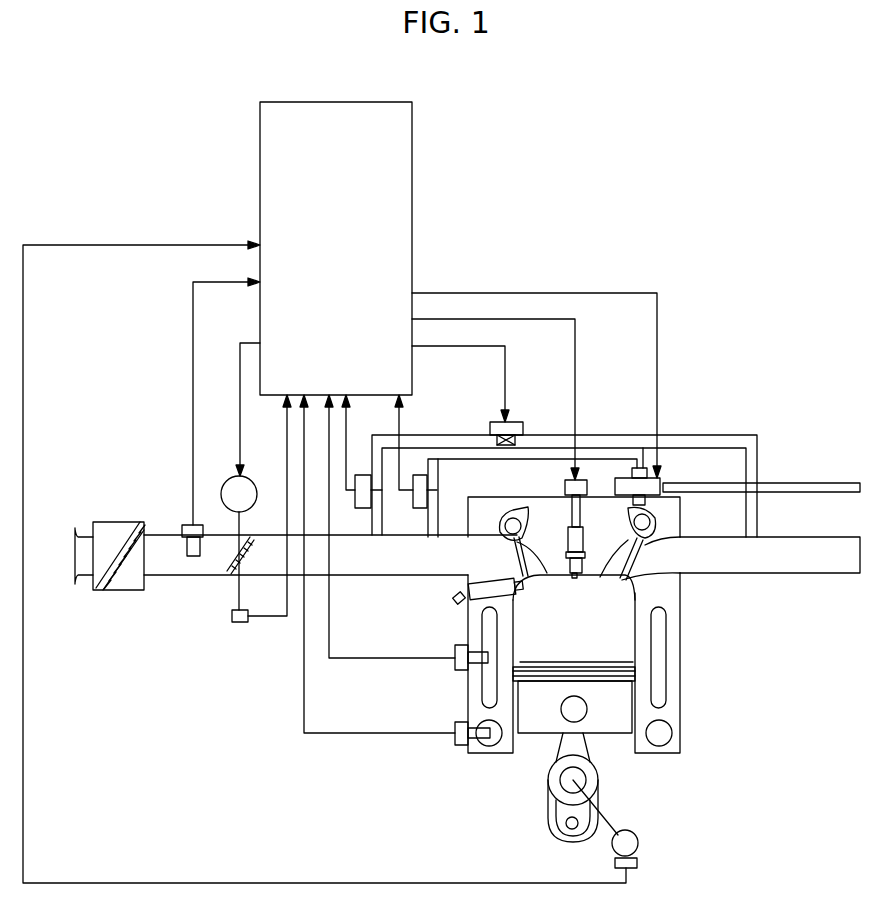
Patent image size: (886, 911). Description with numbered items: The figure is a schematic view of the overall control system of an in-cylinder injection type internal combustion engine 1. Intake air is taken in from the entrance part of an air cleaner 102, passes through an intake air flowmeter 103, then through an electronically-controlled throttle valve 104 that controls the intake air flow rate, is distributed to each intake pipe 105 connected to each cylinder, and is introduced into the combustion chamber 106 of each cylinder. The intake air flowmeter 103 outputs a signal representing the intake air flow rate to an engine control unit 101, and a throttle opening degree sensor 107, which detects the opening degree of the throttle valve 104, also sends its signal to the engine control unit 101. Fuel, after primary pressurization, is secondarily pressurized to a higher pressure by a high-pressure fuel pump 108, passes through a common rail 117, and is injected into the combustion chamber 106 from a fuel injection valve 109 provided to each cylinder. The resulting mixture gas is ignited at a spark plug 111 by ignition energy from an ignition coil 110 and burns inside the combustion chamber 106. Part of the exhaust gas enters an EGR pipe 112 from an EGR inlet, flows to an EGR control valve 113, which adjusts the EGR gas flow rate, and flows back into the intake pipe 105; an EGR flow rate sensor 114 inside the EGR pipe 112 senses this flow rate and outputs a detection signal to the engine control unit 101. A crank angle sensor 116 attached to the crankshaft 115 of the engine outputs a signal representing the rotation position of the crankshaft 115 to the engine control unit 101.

The in-cylinder injection type internal combustion engine 1 is at (475, 496).
The engine control unit 101 is at (260, 158).
The air cleaner 102 is at (108, 521).
The intake air flowmeter (airflow sensor) 103 is at (183, 524).
The electronically-controlled throttle valve 104 is at (255, 480).
The intake pipe 105 is at (343, 567).
The combustion chamber 106 is at (592, 578).
The throttle opening degree sensor 107 is at (232, 616).
The high-pressure fuel pump 108 is at (663, 482).
The fuel injection valve 109 is at (460, 580).
The ignition coil 110 is at (565, 490).
The spark plug 111 is at (565, 540).
The EGR pipe 112 is at (622, 433).
The EGR control valve 113 is at (508, 420).
The EGR flow rate sensor 114 is at (378, 494).
The crankshaft 115 is at (548, 778).
The crank angle sensor 116 is at (640, 840).
The common rail 117 is at (457, 448).